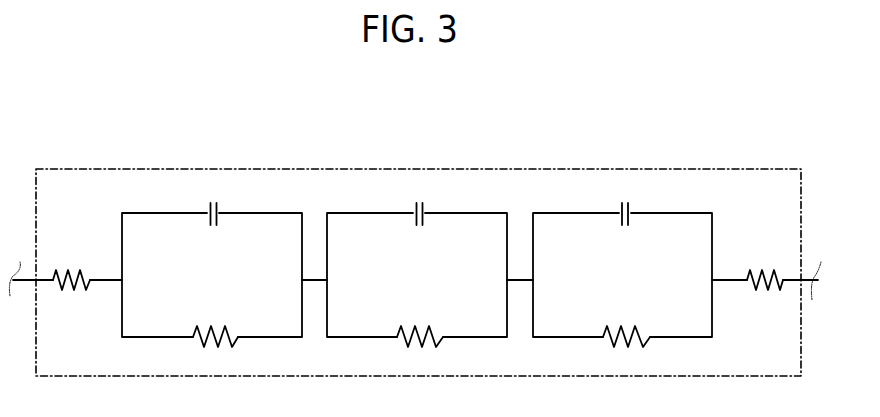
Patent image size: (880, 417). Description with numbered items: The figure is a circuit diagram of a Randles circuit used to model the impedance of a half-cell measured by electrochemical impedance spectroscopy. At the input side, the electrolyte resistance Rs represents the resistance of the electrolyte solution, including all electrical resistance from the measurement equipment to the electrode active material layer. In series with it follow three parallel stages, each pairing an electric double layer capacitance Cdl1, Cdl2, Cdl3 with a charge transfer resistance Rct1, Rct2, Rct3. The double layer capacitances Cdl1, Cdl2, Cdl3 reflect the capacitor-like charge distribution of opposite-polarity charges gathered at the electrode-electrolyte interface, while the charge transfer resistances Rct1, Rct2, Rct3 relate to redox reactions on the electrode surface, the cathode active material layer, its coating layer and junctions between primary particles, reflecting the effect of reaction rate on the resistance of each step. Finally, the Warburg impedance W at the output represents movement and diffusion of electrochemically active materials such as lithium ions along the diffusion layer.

The electrolyte resistance Rs is at (71, 298).
The electric double layer capacitance Cdl1 is at (223, 230).
The charge transfer resistance Rct1 is at (215, 318).
The electric double layer capacitance Cdl2 is at (428, 230).
The charge transfer resistance Rct2 is at (420, 319).
The electric double layer capacitance Cdl3 is at (632, 230).
The charge transfer resistance Rct3 is at (626, 318).
The Warburg impedance W is at (765, 294).